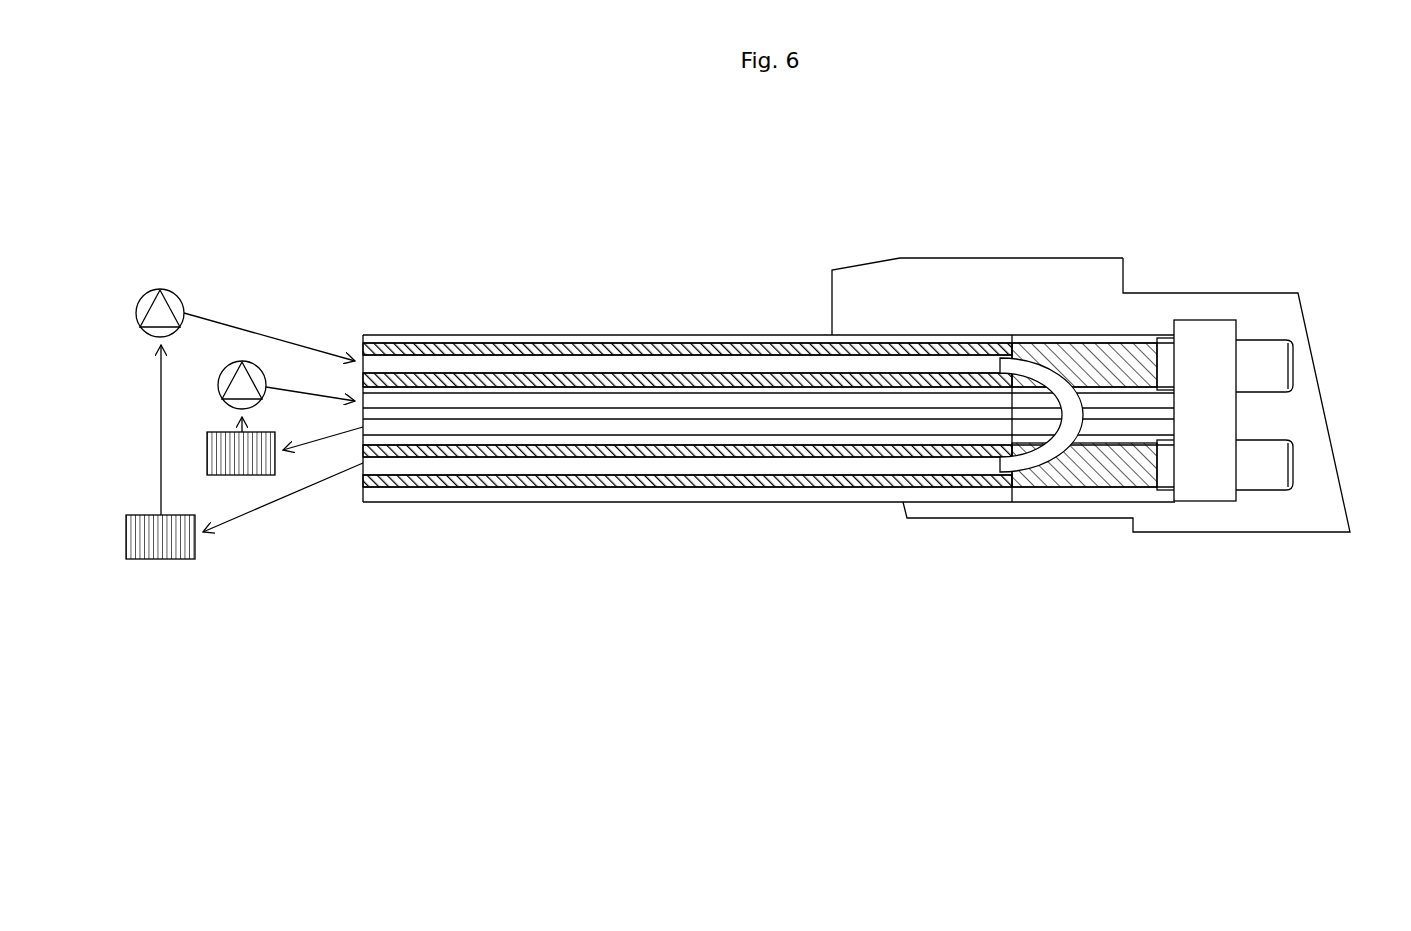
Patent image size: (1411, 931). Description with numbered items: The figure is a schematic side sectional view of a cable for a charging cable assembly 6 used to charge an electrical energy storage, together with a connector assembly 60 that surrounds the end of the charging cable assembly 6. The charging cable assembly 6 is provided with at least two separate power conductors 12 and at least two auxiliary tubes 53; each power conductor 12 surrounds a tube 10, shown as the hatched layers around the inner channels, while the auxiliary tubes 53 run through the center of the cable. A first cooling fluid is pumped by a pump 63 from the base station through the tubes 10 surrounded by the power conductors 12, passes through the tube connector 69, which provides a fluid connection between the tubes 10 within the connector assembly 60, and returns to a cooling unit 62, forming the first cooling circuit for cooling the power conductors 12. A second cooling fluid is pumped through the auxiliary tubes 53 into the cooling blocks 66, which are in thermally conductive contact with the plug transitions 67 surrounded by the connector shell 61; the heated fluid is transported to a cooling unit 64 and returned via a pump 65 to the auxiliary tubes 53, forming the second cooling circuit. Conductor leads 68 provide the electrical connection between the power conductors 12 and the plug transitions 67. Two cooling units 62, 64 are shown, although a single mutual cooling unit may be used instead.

The charging cable assembly 6 is at (412, 172).
The tube 10 is at (398, 359).
The power conductor 12 is at (455, 344).
The auxiliary tube 53 is at (513, 394).
The connector assembly 60 is at (1052, 204).
The connector shell 61 is at (937, 282).
The cooling unit 62 is at (161, 559).
The pump 63 is at (158, 269).
The cooling unit 64 is at (199, 453).
The pump 65 is at (242, 353).
The cooling block 66 is at (1202, 312).
The plug transition 67 is at (1275, 367).
The conductor lead 68 is at (1108, 495).
The tube connector 69 is at (1050, 461).